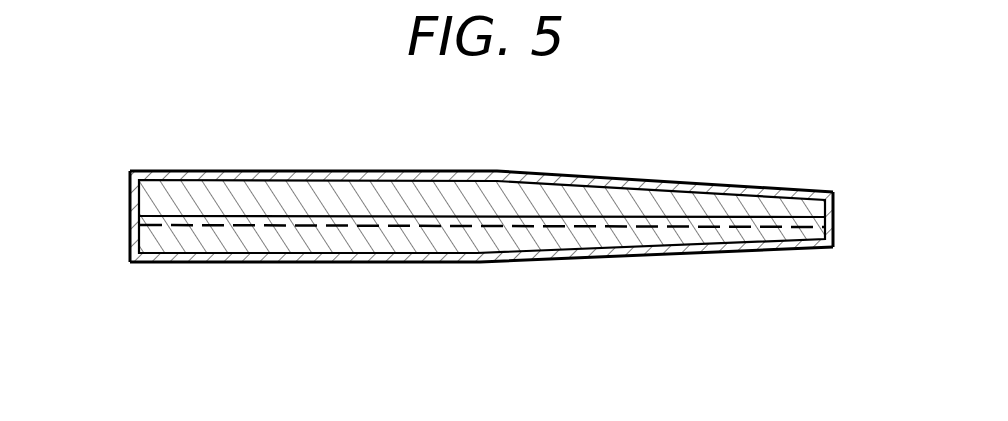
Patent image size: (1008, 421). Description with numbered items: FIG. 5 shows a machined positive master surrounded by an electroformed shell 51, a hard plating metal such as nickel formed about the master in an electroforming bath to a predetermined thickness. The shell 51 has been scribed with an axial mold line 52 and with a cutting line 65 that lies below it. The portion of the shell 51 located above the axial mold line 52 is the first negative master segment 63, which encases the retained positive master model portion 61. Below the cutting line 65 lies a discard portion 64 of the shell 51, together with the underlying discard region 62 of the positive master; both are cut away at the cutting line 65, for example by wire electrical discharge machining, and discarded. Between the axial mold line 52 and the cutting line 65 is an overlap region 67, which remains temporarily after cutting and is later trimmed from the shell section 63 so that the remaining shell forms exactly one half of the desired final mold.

The electroformed shell 51 is at (292, 262).
The axial mold line 52 is at (171, 216).
The positive master model portion 61 is at (221, 198).
The discard region 62 is at (491, 235).
The first negative master segment 63 is at (383, 172).
The discard portion 64 is at (560, 263).
The cutting line 65 is at (400, 228).
The overlap region 67 is at (142, 220).